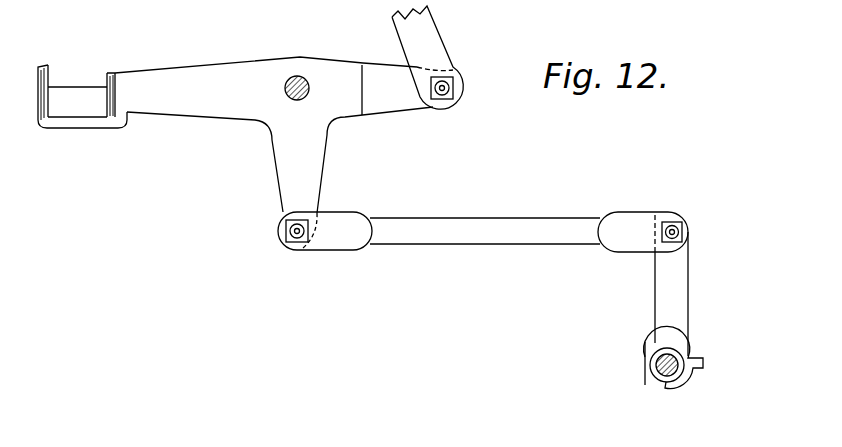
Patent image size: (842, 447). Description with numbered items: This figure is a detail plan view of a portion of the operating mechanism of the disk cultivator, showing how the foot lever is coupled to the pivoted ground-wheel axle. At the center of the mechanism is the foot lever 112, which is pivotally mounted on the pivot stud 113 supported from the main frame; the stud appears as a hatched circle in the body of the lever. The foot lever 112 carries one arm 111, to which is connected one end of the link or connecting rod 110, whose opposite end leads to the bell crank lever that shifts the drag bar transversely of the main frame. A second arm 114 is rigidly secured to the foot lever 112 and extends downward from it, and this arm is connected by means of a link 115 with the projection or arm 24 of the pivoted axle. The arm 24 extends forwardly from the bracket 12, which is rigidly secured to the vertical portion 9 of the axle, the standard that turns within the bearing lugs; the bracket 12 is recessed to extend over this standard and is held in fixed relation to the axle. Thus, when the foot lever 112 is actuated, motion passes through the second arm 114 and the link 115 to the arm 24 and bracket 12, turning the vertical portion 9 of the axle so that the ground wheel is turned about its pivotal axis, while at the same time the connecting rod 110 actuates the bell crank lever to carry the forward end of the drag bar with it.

The vertical portion of the axle 9 is at (657, 364).
The bracket 12 is at (690, 355).
The second arm or projection 24 is at (690, 312).
The link or connecting rod 110 is at (410, 45).
The arm of foot lever 111 is at (408, 97).
The foot lever 112 is at (197, 102).
The pivot stud 113 is at (285, 88).
The second arm 114 is at (287, 192).
The link 115 is at (453, 227).